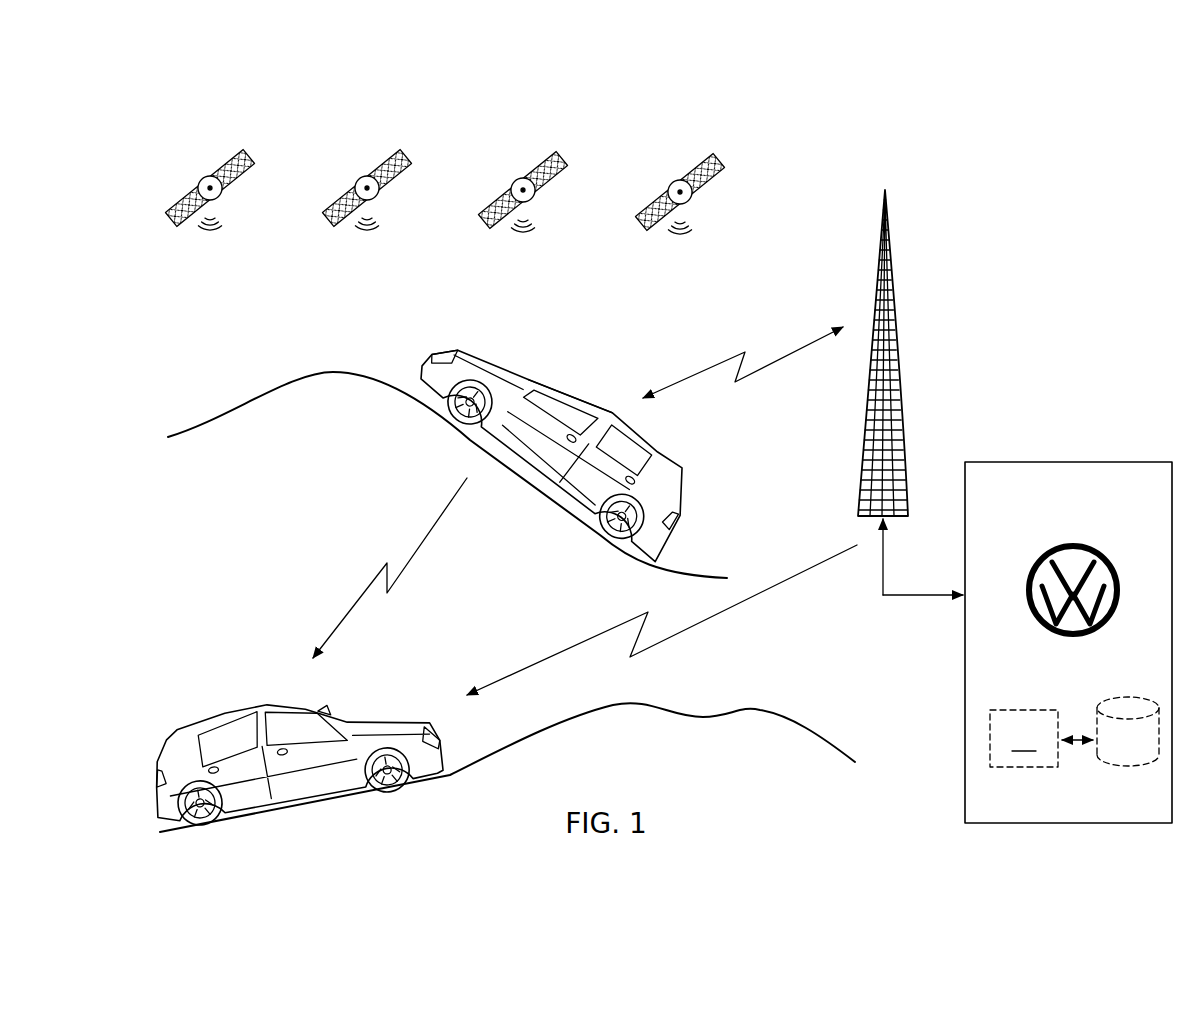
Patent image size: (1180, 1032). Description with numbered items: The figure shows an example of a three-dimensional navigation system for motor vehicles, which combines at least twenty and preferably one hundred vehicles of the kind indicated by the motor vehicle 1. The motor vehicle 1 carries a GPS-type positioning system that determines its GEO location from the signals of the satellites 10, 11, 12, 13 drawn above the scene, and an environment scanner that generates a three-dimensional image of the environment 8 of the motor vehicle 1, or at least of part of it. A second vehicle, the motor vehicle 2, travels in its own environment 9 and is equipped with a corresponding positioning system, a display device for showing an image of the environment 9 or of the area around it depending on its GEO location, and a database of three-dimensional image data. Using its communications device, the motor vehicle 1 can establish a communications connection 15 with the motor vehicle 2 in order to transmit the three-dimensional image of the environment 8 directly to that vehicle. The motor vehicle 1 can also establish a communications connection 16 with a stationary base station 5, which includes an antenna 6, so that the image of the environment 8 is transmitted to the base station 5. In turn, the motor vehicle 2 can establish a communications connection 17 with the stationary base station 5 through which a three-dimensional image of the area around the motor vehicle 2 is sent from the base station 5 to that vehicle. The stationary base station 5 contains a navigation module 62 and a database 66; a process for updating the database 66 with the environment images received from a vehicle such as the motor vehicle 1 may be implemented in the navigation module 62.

The motor vehicle 1 is at (545, 416).
The motor vehicle 2 is at (250, 757).
The stationary base station 5 is at (1068, 611).
The antenna 6 is at (888, 410).
The environment 8 is at (198, 425).
The environment 9 is at (826, 740).
The satellite 10 is at (210, 188).
The satellite 11 is at (367, 188).
The satellite 12 is at (523, 190).
The satellite 13 is at (680, 192).
The communications connection 15 is at (365, 590).
The communications connection 16 is at (760, 370).
The communications connection 17 is at (769, 585).
The navigation module 62 is at (1024, 738).
The database 66 is at (1137, 755).